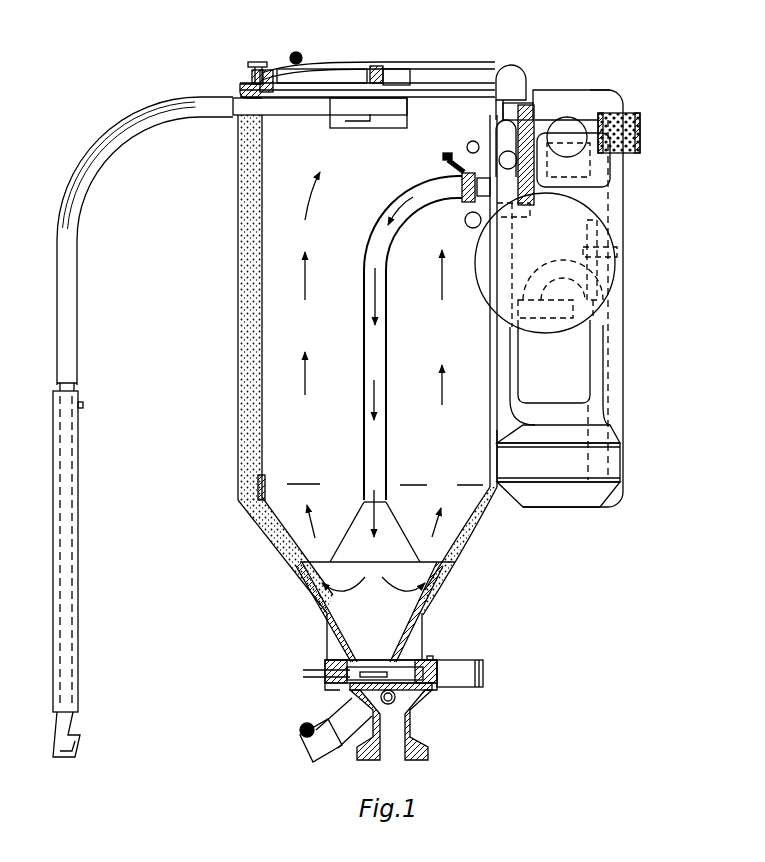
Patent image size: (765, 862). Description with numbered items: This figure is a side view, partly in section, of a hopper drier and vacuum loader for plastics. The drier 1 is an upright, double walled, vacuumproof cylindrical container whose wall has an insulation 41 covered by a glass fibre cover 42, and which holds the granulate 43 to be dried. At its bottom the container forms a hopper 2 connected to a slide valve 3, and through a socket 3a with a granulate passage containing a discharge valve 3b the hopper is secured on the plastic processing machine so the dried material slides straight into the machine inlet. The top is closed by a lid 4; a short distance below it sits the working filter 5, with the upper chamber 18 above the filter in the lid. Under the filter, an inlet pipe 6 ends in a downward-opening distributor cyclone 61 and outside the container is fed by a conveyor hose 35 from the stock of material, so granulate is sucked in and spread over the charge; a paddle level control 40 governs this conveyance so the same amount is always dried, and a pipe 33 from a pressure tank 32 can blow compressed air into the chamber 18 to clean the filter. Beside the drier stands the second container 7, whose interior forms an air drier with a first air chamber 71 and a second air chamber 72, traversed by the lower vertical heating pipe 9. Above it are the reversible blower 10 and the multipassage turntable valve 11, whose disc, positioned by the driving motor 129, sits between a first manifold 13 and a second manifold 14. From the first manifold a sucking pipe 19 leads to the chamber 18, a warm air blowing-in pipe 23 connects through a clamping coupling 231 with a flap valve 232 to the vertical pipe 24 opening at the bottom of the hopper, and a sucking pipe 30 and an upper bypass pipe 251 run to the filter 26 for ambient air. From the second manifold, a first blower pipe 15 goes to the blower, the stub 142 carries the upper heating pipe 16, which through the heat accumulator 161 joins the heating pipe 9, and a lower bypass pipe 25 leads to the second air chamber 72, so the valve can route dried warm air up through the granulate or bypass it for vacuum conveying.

The drier 1 is at (272, 418).
The hopper 2 is at (395, 530).
The slide valve 3 is at (325, 668).
The socket 3a is at (425, 745).
The discharge valve 3b is at (307, 742).
The lid 4 is at (340, 63).
The working filter 5 is at (388, 88).
The inlet pipe 6 is at (277, 116).
The distributor cyclone 61 is at (357, 121).
The second container 7 is at (610, 466).
The first air chamber 71 is at (602, 496).
The second air chamber 72 is at (578, 438).
The lower vertical heating pipe 9 is at (608, 253).
The reversible blower 10 is at (621, 212).
The multipassage turntable valve 11 is at (528, 118).
The first manifold 13 is at (540, 125).
The second manifold 14 is at (572, 125).
The stub 142 is at (606, 184).
The first blower pipe 15 is at (507, 425).
The upper heating pipe 16 is at (618, 333).
The heat accumulator 161 is at (580, 376).
The upper chamber 18 is at (308, 75).
The sucking pipe 19 is at (508, 82).
The warm air blowing-in pipe 23 is at (462, 182).
The clamping coupling 231 is at (450, 165).
The flap valve 232 is at (453, 155).
The vertical pipe 24 is at (386, 338).
The lower bypass pipe 25 is at (506, 126).
The upper bypass pipe 251 is at (600, 112).
The filter 26 is at (640, 130).
The sucking pipe 30 is at (511, 151).
The pressure tank 32 is at (606, 168).
The pipe 33 is at (68, 724).
The conveyor hose 35 is at (70, 355).
The paddle level control 40 is at (474, 140).
The insulation 41 is at (240, 364).
The glass fibre cover 42 is at (240, 326).
The granulate 43 is at (266, 237).
The driving motor 129 is at (608, 92).